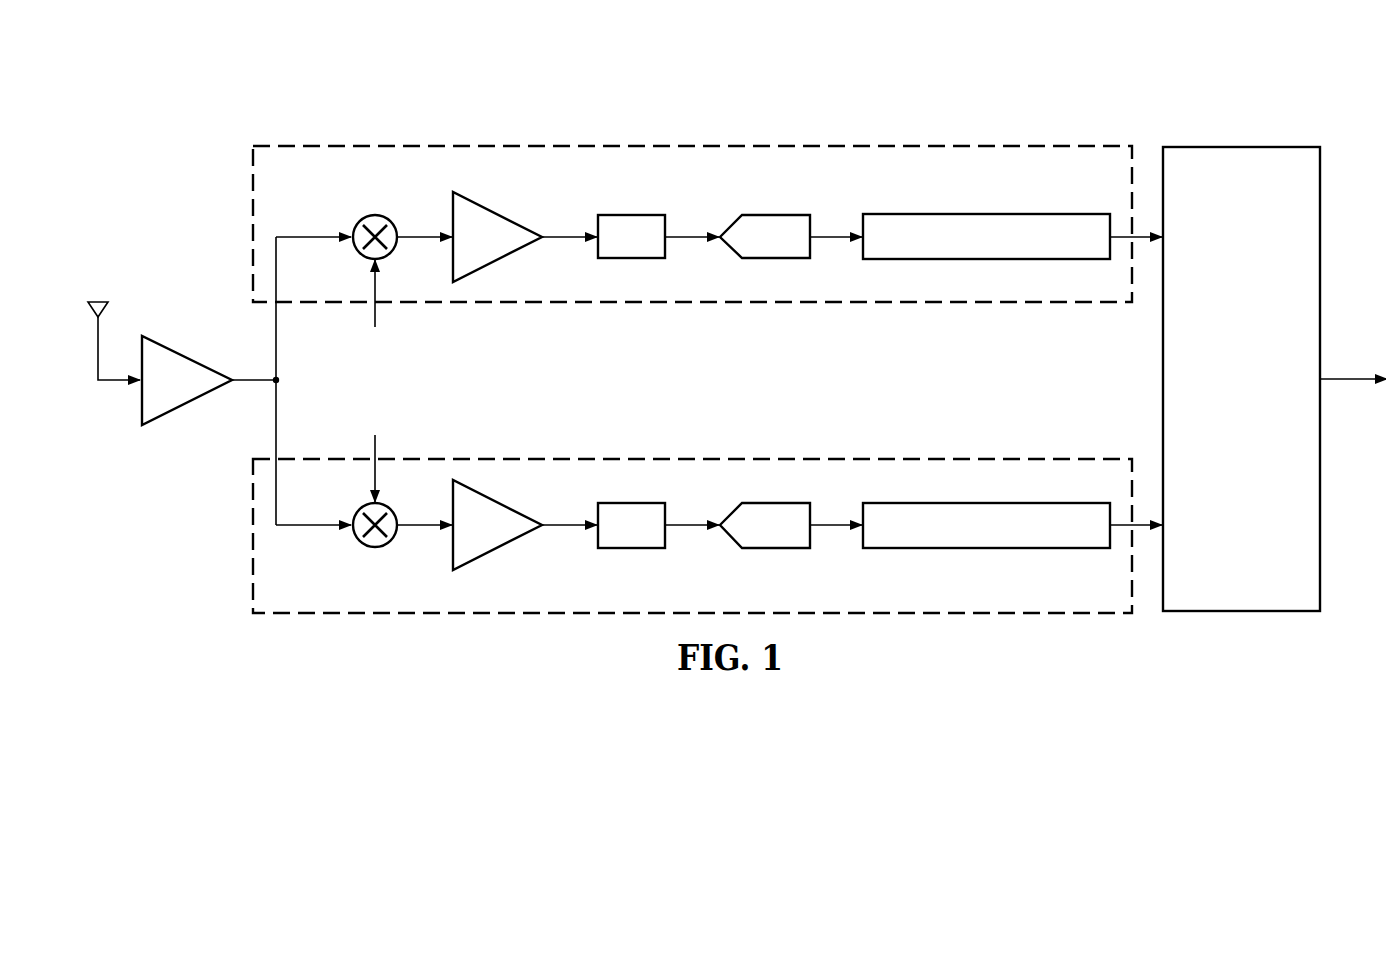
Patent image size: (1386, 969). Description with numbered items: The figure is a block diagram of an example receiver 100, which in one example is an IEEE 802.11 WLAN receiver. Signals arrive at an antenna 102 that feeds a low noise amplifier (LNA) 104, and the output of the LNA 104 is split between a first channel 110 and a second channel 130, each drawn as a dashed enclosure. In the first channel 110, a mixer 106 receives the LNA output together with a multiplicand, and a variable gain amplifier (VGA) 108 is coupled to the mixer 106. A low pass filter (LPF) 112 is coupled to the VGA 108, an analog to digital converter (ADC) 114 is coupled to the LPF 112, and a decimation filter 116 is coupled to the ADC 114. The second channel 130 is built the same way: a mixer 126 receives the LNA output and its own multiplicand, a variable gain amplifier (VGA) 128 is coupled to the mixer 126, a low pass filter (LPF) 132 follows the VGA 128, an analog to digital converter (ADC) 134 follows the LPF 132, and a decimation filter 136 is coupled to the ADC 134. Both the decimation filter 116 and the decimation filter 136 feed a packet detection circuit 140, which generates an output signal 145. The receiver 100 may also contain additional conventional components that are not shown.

The receiver 100 is at (1076, 98).
The antenna 102 is at (88, 300).
The low noise amplifier 104 is at (190, 353).
The mixer 106 is at (358, 219).
The variable gain amplifier 108 is at (502, 211).
The first channel 110 is at (385, 142).
The low pass filter 112 is at (630, 213).
The analog to digital converter 114 is at (775, 213).
The decimation filter 116 is at (988, 213).
The mixer 126 is at (358, 544).
The variable gain amplifier 128 is at (502, 551).
The second channel 130 is at (386, 617).
The low pass filter 132 is at (630, 550).
The analog to digital converter 134 is at (775, 550).
The decimation filter 136 is at (988, 550).
The packet detection circuit 140 is at (1262, 441).
The output signal 145 is at (1345, 373).